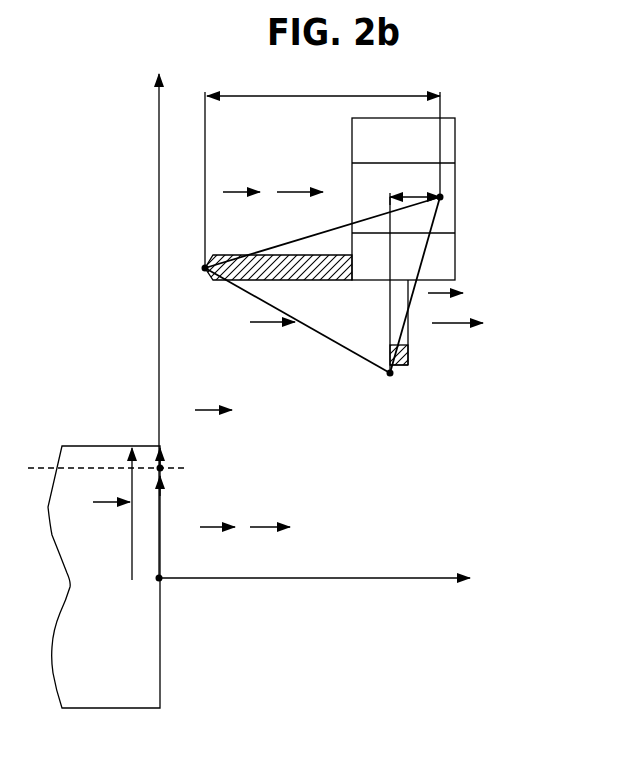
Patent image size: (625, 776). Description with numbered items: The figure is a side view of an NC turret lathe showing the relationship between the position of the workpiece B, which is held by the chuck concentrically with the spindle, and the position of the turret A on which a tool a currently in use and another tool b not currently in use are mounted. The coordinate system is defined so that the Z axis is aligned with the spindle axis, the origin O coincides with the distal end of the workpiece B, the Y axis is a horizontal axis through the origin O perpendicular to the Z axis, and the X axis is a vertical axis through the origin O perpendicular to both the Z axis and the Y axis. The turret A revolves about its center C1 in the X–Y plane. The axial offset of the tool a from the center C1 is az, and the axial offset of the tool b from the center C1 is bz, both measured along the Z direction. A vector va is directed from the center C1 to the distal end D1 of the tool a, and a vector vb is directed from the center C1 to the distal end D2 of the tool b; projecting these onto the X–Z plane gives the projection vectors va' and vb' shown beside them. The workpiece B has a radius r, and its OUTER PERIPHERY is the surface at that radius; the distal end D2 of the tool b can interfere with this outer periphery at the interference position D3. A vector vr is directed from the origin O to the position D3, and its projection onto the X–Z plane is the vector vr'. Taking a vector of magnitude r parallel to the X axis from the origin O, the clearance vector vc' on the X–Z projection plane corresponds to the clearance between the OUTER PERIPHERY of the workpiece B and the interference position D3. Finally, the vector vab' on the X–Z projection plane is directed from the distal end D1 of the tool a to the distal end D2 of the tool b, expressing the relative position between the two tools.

The turret A is at (447, 118).
The tool currently in use a is at (408, 360).
The tool not currently in use b is at (342, 281).
The workpiece B is at (142, 658).
The center of the turret C1 is at (462, 200).
The distal end of tool a D1 is at (391, 391).
The distal end of tool b D2 is at (189, 269).
The interference position D3 is at (125, 472).
The origin O is at (175, 599).
The X axis X is at (158, 311).
The Y axis Y is at (4, 580).
The Z axis Z is at (324, 578).
The axial offset amount of tool b bz is at (322, 168).
The axial offset amount of tool a az is at (415, 187).
The radius of the workpiece r is at (112, 514).
The vector vb is at (251, 218).
The projection vector vb' is at (297, 208).
The vector va is at (435, 306).
The projection vector va' is at (458, 340).
The vector vab' is at (275, 342).
The clearance vector vc' is at (197, 437).
The vector vr is at (198, 533).
The projection vector vr' is at (271, 543).
The outer periphery of the workpiece OUTER PERIPHERY is at (118, 447).